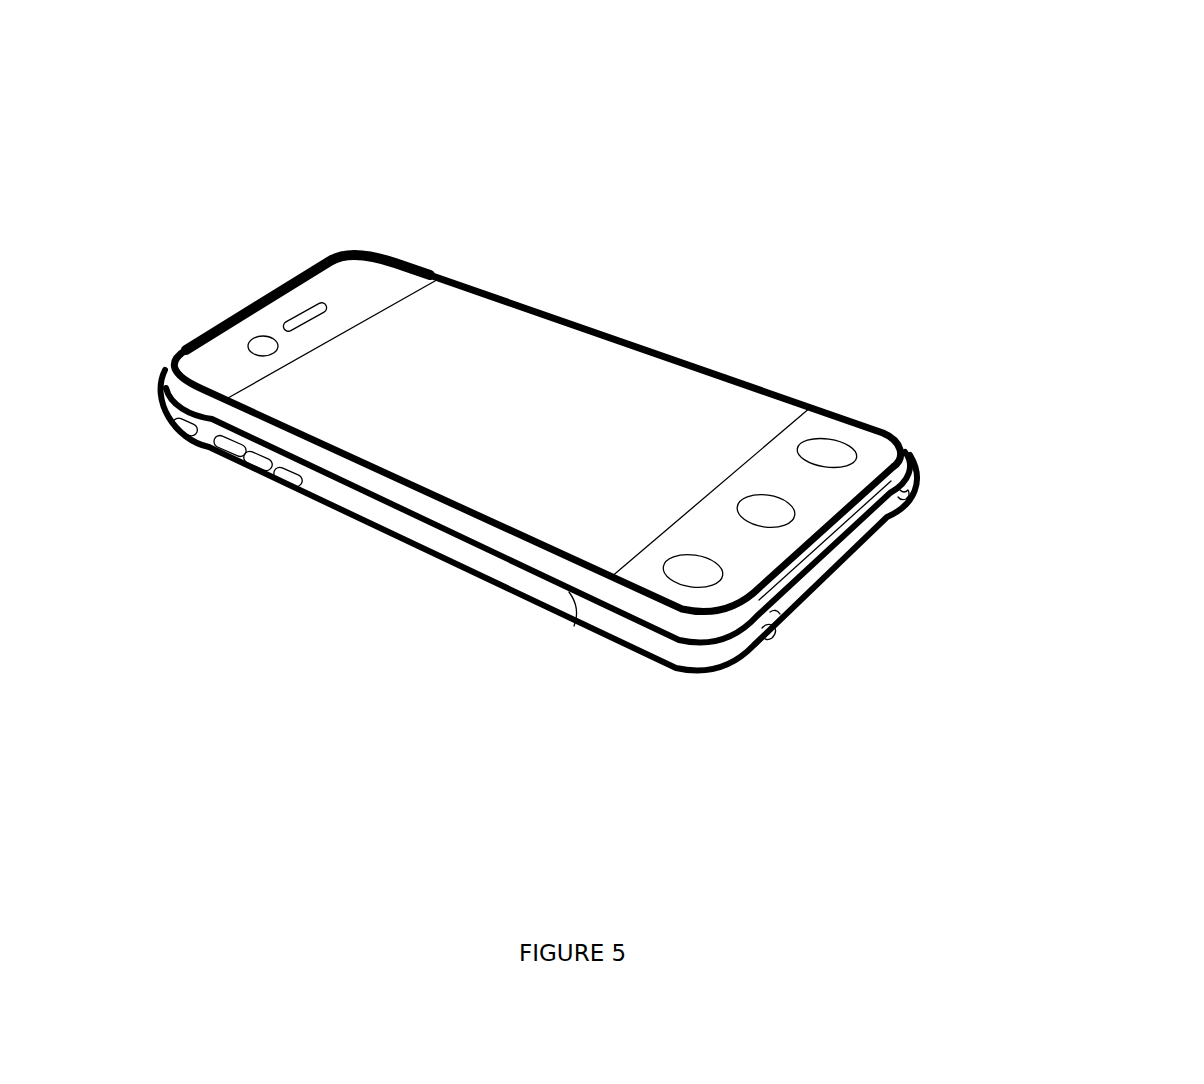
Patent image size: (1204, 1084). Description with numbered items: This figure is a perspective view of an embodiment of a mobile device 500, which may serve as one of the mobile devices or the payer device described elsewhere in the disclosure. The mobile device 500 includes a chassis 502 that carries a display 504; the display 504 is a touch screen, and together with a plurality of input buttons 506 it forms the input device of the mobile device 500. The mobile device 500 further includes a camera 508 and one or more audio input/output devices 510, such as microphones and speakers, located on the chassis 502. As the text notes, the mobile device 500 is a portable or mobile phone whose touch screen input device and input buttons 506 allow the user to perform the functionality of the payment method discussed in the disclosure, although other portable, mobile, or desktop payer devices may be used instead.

The mobile device 500 is at (669, 426).
The chassis 502 is at (705, 658).
The display 504 is at (480, 412).
The input buttons 506 is at (700, 568).
The camera 508 is at (259, 340).
The audio input/output devices 510 is at (908, 498).